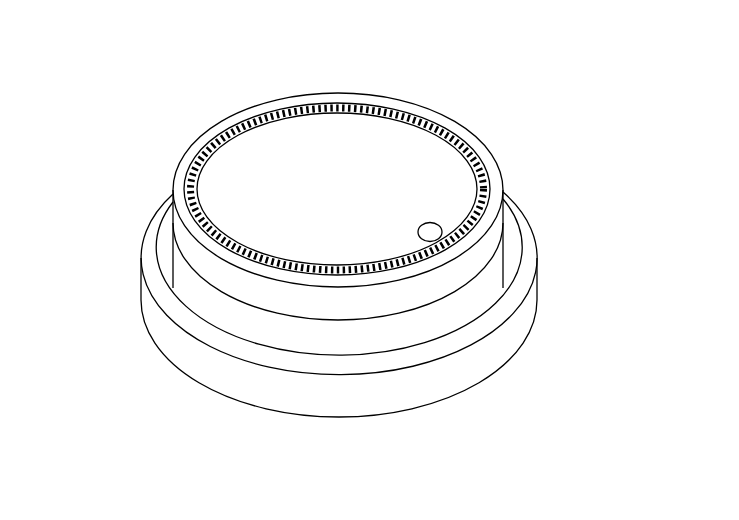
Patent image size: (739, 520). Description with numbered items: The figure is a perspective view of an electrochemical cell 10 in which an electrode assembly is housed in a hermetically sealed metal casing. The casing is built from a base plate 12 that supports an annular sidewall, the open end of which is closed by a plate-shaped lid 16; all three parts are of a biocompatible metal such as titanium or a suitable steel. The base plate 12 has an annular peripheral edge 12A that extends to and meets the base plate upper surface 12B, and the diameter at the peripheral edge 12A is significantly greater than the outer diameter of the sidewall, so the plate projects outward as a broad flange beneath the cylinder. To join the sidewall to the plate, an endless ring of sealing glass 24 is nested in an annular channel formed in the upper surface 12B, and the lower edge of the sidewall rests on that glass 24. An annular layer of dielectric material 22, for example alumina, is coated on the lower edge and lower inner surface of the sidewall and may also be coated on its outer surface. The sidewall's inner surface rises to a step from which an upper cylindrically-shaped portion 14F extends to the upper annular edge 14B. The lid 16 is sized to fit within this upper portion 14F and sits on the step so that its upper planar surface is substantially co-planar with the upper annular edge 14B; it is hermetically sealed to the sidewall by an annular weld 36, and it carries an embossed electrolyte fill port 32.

The electrochemical cell 10 is at (522, 90).
The base plate 12 is at (383, 317).
The annular peripheral edge 12A is at (480, 358).
The base plate upper surface 12B is at (525, 286).
The upper annular edge 14B is at (359, 166).
The upper cylindrically-shaped portion 14F is at (153, 212).
The lid 16 is at (328, 130).
The dielectric material 22 is at (165, 277).
The sealing glass 24 is at (160, 250).
The electrolyte fill port 32 is at (431, 231).
The annular weld 36 is at (212, 141).